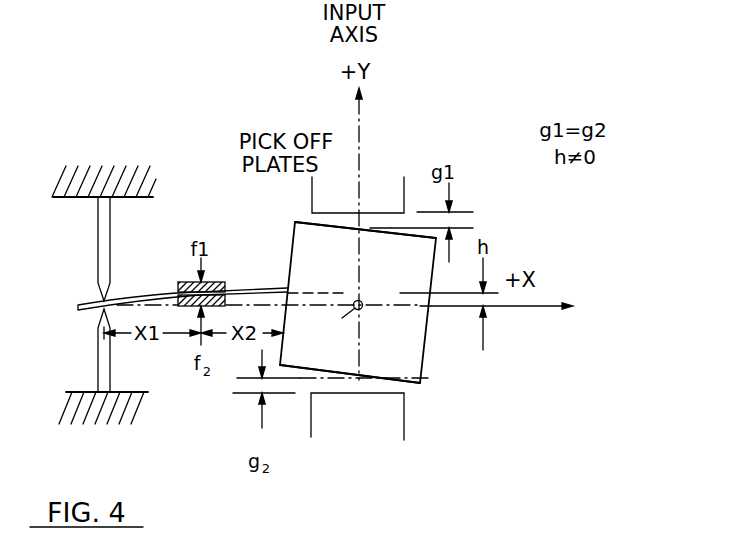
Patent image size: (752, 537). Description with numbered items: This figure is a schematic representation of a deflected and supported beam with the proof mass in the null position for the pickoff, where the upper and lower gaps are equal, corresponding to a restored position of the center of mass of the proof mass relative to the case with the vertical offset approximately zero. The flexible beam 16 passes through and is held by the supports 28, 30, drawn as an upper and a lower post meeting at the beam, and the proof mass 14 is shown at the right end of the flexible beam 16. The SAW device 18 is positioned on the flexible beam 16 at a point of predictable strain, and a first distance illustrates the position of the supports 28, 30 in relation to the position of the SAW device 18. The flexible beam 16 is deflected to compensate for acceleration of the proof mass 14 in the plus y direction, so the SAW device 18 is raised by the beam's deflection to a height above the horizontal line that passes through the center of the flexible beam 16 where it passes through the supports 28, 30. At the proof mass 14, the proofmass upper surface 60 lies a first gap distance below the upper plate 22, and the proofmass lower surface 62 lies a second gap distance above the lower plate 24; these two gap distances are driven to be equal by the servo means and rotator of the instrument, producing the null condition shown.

The proof mass 14 is at (418, 273).
The flexible beam 16 is at (130, 297).
The SAW device 18 is at (203, 282).
The upper plate 22 is at (362, 212).
The lower plate 24 is at (340, 395).
The support 28 is at (107, 242).
The support 30 is at (100, 367).
The proofmass upper surface 60 is at (345, 232).
The proofmass lower surface 62 is at (375, 376).